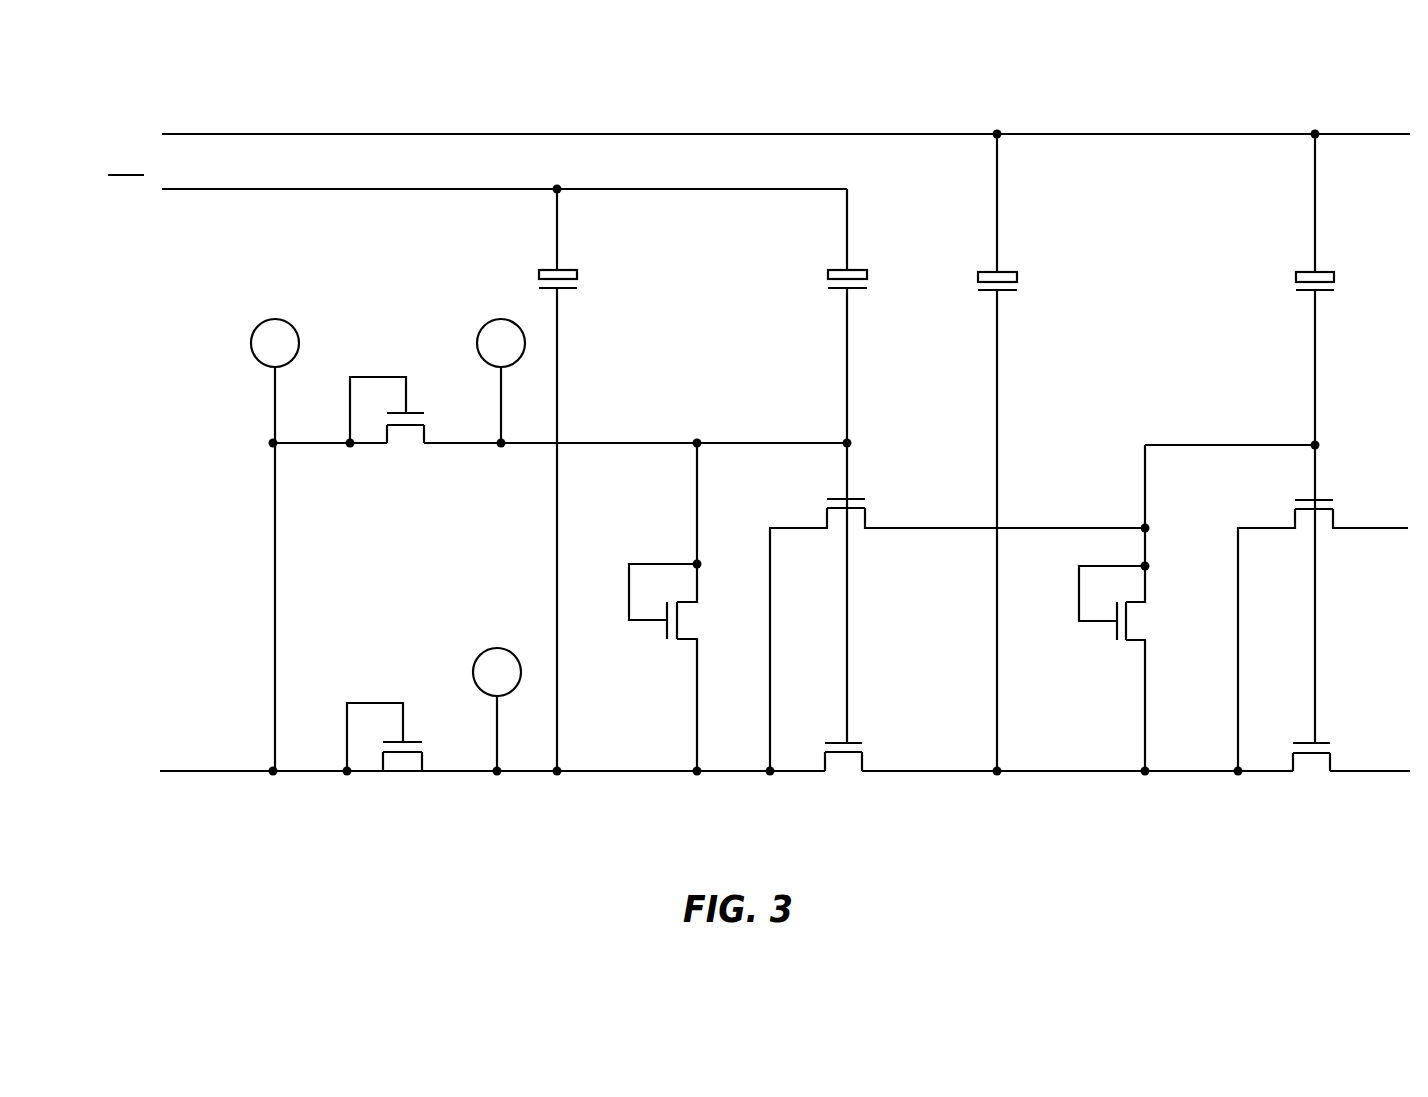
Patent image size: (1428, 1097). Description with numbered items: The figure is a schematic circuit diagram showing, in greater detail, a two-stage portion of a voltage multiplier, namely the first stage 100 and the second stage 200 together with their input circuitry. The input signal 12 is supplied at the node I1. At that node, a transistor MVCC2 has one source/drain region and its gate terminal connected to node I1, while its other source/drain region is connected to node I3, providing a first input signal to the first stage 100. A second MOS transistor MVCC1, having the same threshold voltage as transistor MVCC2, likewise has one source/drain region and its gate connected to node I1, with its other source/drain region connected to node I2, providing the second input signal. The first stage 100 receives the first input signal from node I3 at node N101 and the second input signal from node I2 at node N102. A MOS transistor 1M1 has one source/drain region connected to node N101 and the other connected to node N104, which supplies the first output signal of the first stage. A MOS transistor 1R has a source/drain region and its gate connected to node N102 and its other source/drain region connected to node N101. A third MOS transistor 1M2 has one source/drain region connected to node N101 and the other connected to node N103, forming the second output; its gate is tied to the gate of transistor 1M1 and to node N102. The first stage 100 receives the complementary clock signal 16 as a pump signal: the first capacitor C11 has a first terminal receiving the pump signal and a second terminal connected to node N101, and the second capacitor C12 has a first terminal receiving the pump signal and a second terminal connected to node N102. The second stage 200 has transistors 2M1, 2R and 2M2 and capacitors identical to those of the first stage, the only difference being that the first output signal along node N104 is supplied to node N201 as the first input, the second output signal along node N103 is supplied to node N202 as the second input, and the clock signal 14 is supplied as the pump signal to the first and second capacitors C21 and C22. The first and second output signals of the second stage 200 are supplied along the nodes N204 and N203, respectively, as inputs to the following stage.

The input signal Vcc 12 is at (206, 773).
The clock signal CLK 14 is at (219, 134).
The clock signal CLK-bar 16 is at (221, 191).
The first stage 100 is at (788, 433).
The second stage 200 is at (1242, 435).
The node N101 is at (629, 773).
The node N102 is at (694, 447).
The node N103 is at (919, 526).
The node N104 is at (913, 769).
The node N201 is at (1146, 774).
The node N202 is at (1150, 525).
The node N203 is at (1388, 528).
The node N204 is at (1385, 769).
The first capacitor C11 is at (579, 480).
The second capacitor C12 is at (872, 316).
The first capacitor of second stage C21 is at (1019, 452).
The second capacitor of second stage C22 is at (1339, 289).
The second MOS transistor 1R is at (675, 667).
The MOS transistor of second stage 2R is at (1128, 668).
The MOS transistor 1M1 is at (843, 776).
The third MOS transistor 1M2 is at (957, 607).
The MOS transistor of second stage 2M1 is at (1311, 776).
The MOS transistor of second stage 2M2 is at (1323, 608).
The MOS transistor MVCC1 is at (393, 430).
The transistor MVCC2 is at (391, 758).
The node I1 is at (275, 545).
The node I2 is at (501, 381).
The node I3 is at (497, 709).